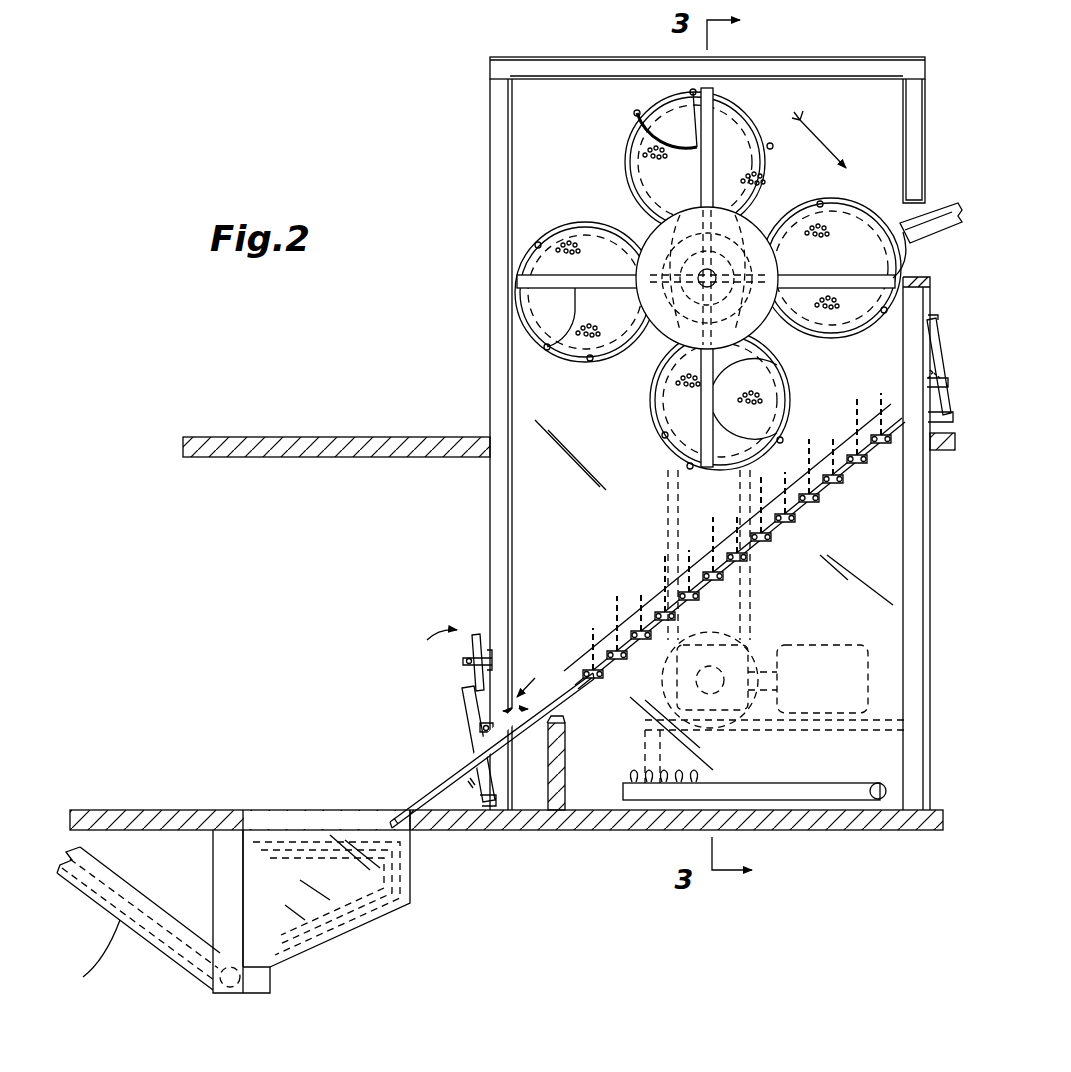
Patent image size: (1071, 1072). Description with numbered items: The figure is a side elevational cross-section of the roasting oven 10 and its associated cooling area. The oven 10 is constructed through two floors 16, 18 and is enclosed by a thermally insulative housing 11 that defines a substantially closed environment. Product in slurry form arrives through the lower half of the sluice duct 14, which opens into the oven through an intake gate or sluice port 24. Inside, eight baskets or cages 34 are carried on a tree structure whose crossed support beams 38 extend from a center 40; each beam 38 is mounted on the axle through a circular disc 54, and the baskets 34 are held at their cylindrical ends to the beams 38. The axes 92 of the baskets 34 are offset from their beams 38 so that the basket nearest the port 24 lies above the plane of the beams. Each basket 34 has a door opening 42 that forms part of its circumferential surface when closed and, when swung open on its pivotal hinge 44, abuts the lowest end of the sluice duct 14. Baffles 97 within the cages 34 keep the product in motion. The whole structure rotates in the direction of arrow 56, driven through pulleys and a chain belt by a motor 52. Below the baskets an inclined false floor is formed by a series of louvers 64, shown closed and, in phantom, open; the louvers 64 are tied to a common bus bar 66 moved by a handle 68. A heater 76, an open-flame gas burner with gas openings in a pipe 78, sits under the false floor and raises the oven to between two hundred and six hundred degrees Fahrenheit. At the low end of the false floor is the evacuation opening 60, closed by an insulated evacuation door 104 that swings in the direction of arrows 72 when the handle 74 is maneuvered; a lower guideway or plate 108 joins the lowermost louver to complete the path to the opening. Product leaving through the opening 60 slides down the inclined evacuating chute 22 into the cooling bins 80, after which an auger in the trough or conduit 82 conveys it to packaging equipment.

The roasting oven 10 is at (460, 152).
The thermally insulative housing 11 is at (773, 58).
The sluice duct 14 is at (925, 212).
The floor 16 is at (188, 810).
The floor 18 is at (348, 437).
The inclined evacuating chute 22 is at (446, 774).
The intake gate or sluice port 24 is at (933, 542).
The baskets or cages 34 is at (745, 106).
The crossed support beams 38 is at (712, 90).
The center 40 is at (700, 300).
The door opening 42 is at (924, 266).
The pivotal hinge 44 is at (910, 368).
The motor 52 is at (845, 645).
The circular disc 54 is at (757, 232).
The arrow 56 is at (820, 140).
The evacuation opening 60 is at (461, 705).
The louvers 64 is at (630, 662).
The common bus bar 66 is at (818, 512).
The handle 68 is at (933, 373).
The arrows 72 is at (500, 676).
The handle 74 is at (480, 645).
The heater 76 is at (862, 750).
The pipe 78 is at (790, 800).
The cooling bins 80 is at (355, 935).
The trough or conduit 82 is at (150, 875).
The axes 92 is at (693, 164).
The baffles 97 is at (634, 128).
The evacuation door 104 is at (566, 720).
The lower guideway or plate 108 is at (566, 770).